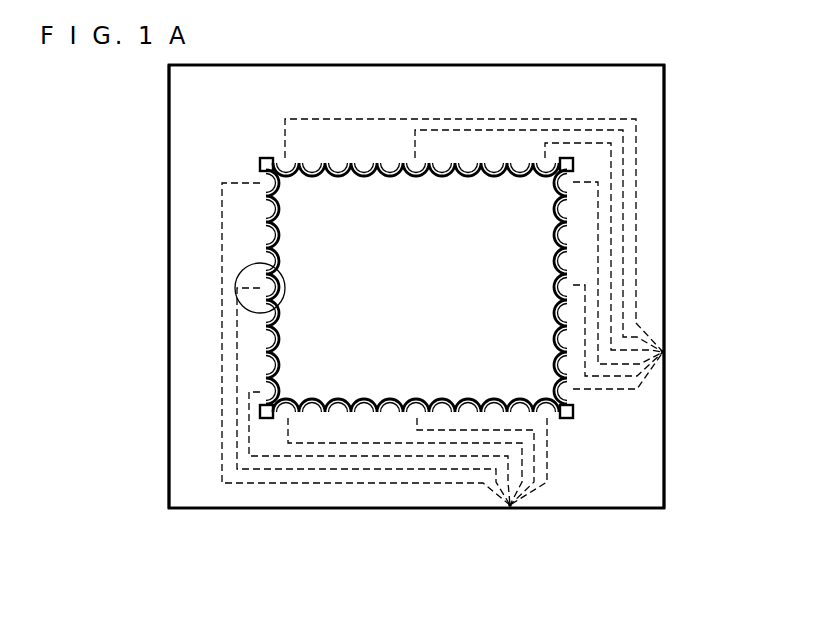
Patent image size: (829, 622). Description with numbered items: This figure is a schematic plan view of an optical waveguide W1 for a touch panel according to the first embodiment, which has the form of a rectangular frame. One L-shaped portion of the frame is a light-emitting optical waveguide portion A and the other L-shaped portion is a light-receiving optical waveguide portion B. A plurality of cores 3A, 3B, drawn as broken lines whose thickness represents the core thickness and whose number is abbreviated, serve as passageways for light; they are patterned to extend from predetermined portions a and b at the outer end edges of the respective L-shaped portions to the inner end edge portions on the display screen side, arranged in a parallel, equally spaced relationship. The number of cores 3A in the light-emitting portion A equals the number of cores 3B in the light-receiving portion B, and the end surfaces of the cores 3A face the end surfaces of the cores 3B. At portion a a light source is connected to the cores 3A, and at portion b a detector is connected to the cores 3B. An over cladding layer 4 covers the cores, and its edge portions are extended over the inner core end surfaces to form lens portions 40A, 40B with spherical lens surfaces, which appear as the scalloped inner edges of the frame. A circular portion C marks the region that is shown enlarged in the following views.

The optical waveguide for the touch panel W1 is at (160, 170).
The over cladding layer 4 is at (651, 454).
The light-emitting optical waveguide portion A is at (178, 400).
The light-receiving optical waveguide portion B is at (662, 153).
The circular portion C is at (240, 268).
The lens portion 40A is at (277, 333).
The lens portion 40B is at (563, 234).
The cores 3A is at (372, 443).
The cores 3B is at (598, 220).
The predetermined portion a is at (510, 506).
The predetermined portion b is at (663, 352).